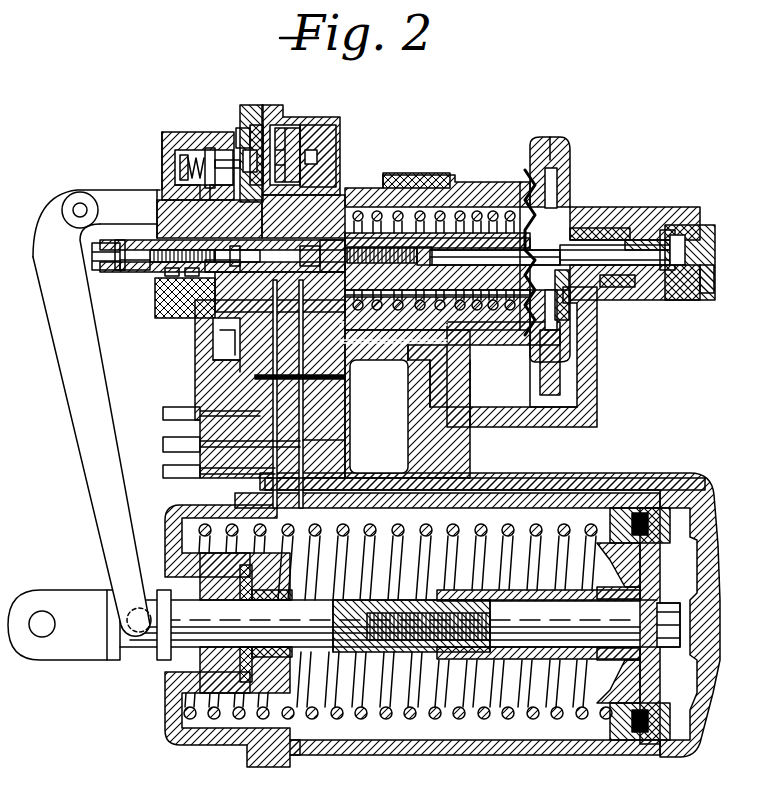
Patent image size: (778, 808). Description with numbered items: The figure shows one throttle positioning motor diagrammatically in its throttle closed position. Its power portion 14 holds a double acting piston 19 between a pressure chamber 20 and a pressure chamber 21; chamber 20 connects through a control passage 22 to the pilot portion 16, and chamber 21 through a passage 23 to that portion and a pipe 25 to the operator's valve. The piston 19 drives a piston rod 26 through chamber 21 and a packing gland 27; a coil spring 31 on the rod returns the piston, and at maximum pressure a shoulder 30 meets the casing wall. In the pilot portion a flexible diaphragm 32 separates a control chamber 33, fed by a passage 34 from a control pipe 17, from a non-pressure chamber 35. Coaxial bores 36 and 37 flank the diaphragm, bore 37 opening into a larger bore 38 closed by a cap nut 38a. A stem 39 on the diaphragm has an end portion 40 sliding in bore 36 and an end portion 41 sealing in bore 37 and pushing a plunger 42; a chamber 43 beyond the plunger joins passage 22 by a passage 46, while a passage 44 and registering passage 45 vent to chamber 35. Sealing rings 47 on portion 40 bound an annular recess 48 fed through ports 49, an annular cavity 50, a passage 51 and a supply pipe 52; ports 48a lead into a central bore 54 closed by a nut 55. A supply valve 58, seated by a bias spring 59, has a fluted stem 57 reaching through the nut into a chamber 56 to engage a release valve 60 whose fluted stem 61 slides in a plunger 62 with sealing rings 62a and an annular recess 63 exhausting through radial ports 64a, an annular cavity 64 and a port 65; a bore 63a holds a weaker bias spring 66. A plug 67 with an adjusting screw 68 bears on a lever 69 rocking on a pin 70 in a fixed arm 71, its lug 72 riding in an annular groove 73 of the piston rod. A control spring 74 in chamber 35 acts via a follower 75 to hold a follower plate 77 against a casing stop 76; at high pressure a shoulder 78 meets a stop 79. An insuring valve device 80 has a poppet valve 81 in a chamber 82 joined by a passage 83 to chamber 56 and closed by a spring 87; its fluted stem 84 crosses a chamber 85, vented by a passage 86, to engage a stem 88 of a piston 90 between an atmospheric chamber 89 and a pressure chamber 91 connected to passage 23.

The power portion 14 is at (705, 477).
The pilot portion 16 is at (565, 131).
The control pipe 17 is at (163, 414).
The double acting piston 19 is at (600, 720).
The pressure chamber 20 is at (690, 682).
The pressure chamber 21 is at (545, 712).
The fluid pressure control passage 22 is at (638, 500).
The passage 23 is at (320, 482).
The pipe 25 is at (180, 472).
The piston rod 26 is at (378, 652).
The packing gland 27 is at (255, 660).
The shoulder 30 is at (425, 655).
The coil spring 31 is at (512, 662).
The flexible diaphragm 32 is at (560, 150).
The control chamber 33 is at (572, 205).
The passage 34 is at (562, 360).
The non-pressure chamber 35 is at (540, 140).
The casing bore 36 is at (470, 182).
The casing bore 37 is at (615, 235).
The larger bore 38 is at (665, 232).
The cap nut 38a is at (715, 265).
The stem 39 is at (520, 200).
The end portion 40 is at (425, 235).
The end portion 41 is at (585, 232).
The plunger 42 is at (705, 225).
The chamber 43 is at (714, 240).
The passage 44 is at (660, 300).
The registering passage 45 is at (625, 287).
The passage 46 is at (590, 380).
The sealing rings 47 is at (318, 238).
The annular recess 48 is at (370, 238).
The ports 48a is at (385, 330).
The ports 49 is at (320, 240).
The annular cavity 50 is at (360, 245).
The passage 51 is at (312, 450).
The fluid pressure supply pipe 52 is at (170, 445).
The central bore 54 is at (420, 212).
The nut 55 is at (330, 238).
The chamber 56 is at (205, 380).
The fluted stem 57 is at (395, 330).
The supply valve 58 is at (372, 330).
The bias spring 59 is at (395, 240).
The release valve 60 is at (222, 338).
The fluted stem 61 is at (210, 320).
The plunger 62 is at (170, 290).
The sealing rings 62a is at (175, 240).
The annular recess 63 is at (190, 276).
The bore 63a is at (135, 270).
The annular cavity 64 is at (215, 362).
The radial ports 64a is at (120, 270).
The port 65 is at (172, 276).
The bias spring 66 is at (210, 270).
The plug 67 is at (155, 276).
The adjusting screw 68 is at (126, 243).
The lever 69 is at (72, 375).
The pin 70 is at (78, 207).
The fixed arm 71 is at (103, 195).
The lug 72 is at (160, 652).
The annular groove 73 is at (138, 652).
The control spring 74 is at (528, 175).
The follower 75 is at (478, 345).
The casing stop 76 is at (555, 185).
The follower plate 77 is at (570, 300).
The shoulder 78 is at (436, 345).
The stop 79 is at (400, 295).
The insuring valve device 80 is at (297, 98).
The poppet valve 81 is at (196, 147).
The chamber 82 is at (205, 150).
The passage 83 is at (170, 185).
The fluted stem 84 is at (222, 160).
The chamber 85 is at (224, 130).
The passage 86 is at (165, 210).
The spring 87 is at (162, 160).
The stem 88 is at (248, 130).
The chamber 89 is at (272, 120).
The piston 90 is at (288, 150).
The pressure chamber 91 is at (318, 175).